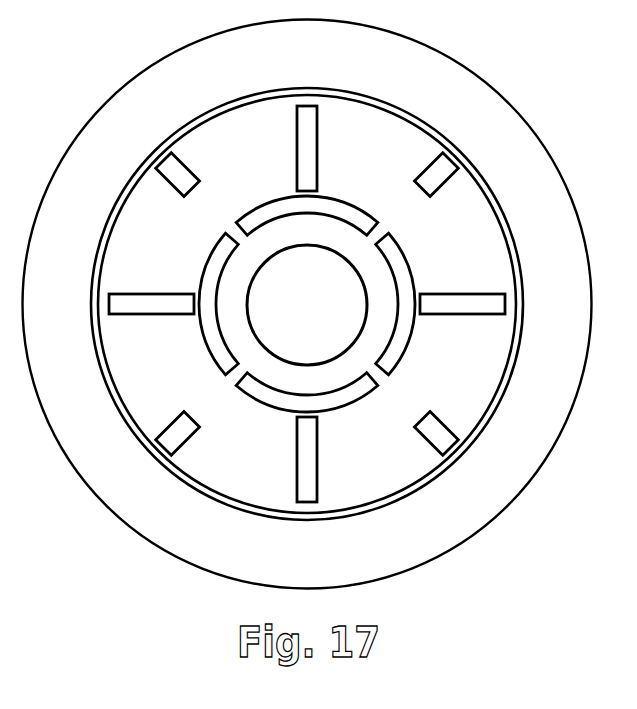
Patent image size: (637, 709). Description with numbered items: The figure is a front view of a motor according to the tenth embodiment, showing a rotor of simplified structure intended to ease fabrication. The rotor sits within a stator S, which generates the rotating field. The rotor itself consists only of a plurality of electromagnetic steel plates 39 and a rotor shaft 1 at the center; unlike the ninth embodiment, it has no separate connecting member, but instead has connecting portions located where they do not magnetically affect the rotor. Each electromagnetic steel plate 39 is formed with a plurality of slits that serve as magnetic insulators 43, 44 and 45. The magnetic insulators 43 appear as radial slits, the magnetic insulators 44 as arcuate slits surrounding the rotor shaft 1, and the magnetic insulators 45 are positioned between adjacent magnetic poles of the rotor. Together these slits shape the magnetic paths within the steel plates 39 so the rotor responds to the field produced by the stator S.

The stator S is at (485, 102).
The electromagnetic steel plates 39 is at (235, 126).
The rotor shaft 1 is at (343, 291).
The magnetic insulators 43 is at (310, 107).
The magnetic insulators 44 is at (338, 208).
The magnetic insulators 45 is at (452, 169).